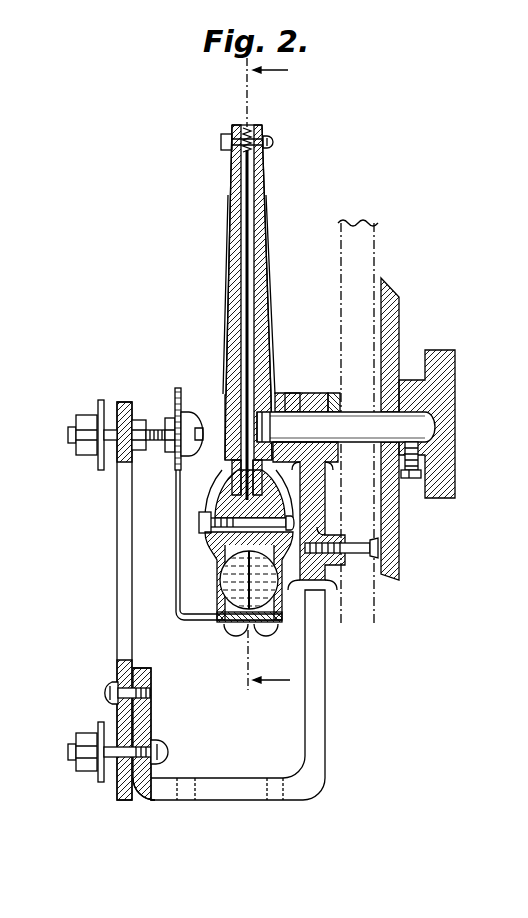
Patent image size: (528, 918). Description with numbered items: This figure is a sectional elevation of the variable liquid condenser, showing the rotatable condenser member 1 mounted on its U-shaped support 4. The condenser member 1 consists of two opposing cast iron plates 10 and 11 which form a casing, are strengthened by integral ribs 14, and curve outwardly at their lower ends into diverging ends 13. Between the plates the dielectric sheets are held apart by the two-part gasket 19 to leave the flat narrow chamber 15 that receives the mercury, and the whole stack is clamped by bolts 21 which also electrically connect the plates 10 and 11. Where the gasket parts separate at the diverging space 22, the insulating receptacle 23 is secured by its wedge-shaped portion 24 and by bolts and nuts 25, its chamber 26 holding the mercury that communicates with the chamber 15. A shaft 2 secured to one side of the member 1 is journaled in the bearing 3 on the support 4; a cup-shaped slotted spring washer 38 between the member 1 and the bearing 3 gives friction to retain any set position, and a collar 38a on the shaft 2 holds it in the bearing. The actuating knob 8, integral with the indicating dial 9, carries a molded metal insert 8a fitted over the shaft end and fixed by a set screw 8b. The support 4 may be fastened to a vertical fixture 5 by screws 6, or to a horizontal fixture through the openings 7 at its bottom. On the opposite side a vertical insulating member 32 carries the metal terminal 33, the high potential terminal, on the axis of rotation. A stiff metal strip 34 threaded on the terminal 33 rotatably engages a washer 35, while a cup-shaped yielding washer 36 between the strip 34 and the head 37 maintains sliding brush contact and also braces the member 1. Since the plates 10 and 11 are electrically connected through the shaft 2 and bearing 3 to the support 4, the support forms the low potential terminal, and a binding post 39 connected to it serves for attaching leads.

The condenser member 1 is at (232, 214).
The shaft 2 is at (360, 440).
The bearing 3 is at (290, 393).
The U-shaped support 4 is at (325, 672).
The vertical fixture 5 is at (362, 263).
The screws 6 is at (342, 545).
The openings 7 is at (184, 796).
The actuating knob 8 is at (455, 476).
The metal insert 8a is at (430, 414).
The set screw 8b is at (412, 479).
The indicating dial 9 is at (398, 290).
The plate 10 is at (262, 182).
The plate 11 is at (232, 180).
The diverging ends 13 is at (274, 515).
The ribs 14 is at (228, 270).
The chamber 15 is at (250, 285).
The gasket 19 is at (250, 128).
The bolts 21 is at (220, 142).
The diverging space 22 is at (218, 560).
The receptacle 23 is at (212, 621).
The wedge-shaped portion 24 is at (236, 575).
The bolts and nuts 25 is at (210, 524).
The chamber 26 is at (232, 633).
The insulating member 32 is at (116, 506).
The terminal 33 is at (74, 440).
The metal strip 34 is at (176, 508).
The washer 35 is at (174, 462).
The yielding washer 36 is at (181, 398).
The head 37 is at (190, 420).
The spring washer 38 is at (277, 393).
The collar 38a is at (337, 400).
The binding post 39 is at (80, 765).